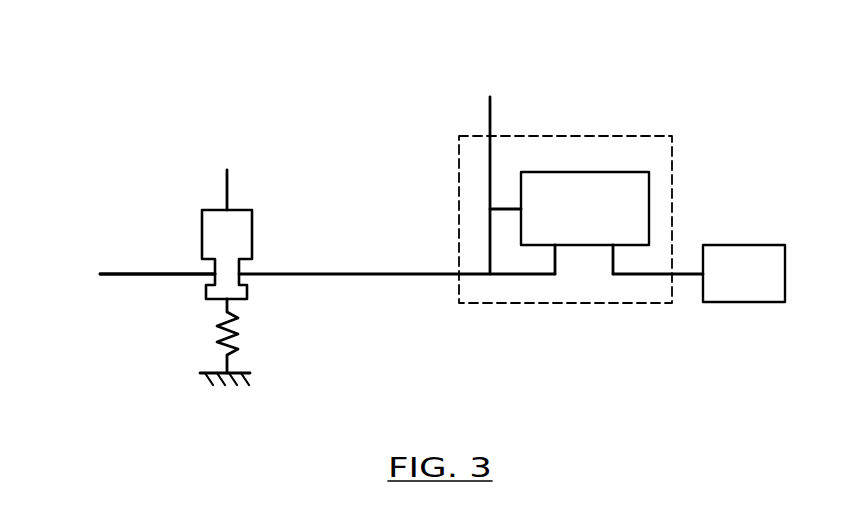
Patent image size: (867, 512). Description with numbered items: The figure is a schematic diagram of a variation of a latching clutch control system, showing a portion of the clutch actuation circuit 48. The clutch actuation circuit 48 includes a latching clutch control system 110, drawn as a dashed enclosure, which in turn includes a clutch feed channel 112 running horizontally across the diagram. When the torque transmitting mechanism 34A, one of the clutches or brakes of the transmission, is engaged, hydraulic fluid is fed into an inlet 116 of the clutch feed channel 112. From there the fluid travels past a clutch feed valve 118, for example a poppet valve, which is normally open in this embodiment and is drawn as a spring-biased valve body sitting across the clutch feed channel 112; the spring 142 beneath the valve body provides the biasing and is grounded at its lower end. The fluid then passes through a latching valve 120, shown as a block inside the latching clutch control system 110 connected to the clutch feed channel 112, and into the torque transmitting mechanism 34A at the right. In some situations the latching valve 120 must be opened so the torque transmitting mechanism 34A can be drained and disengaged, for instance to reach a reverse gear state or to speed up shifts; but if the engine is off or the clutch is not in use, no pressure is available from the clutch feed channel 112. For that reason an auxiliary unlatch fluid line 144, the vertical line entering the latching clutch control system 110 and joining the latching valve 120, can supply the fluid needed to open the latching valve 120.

The clutch actuation circuit 48 is at (245, 84).
The inlet 116 is at (100, 273).
The clutch feed channel 112 is at (157, 272).
The clutch feed valve 118 is at (253, 232).
The spring 142 is at (235, 328).
The latching clutch control system 110 is at (420, 322).
The auxiliary unlatch fluid line 144 is at (492, 108).
The latching valve 120 is at (605, 195).
The torque transmitting mechanism 34A is at (764, 288).